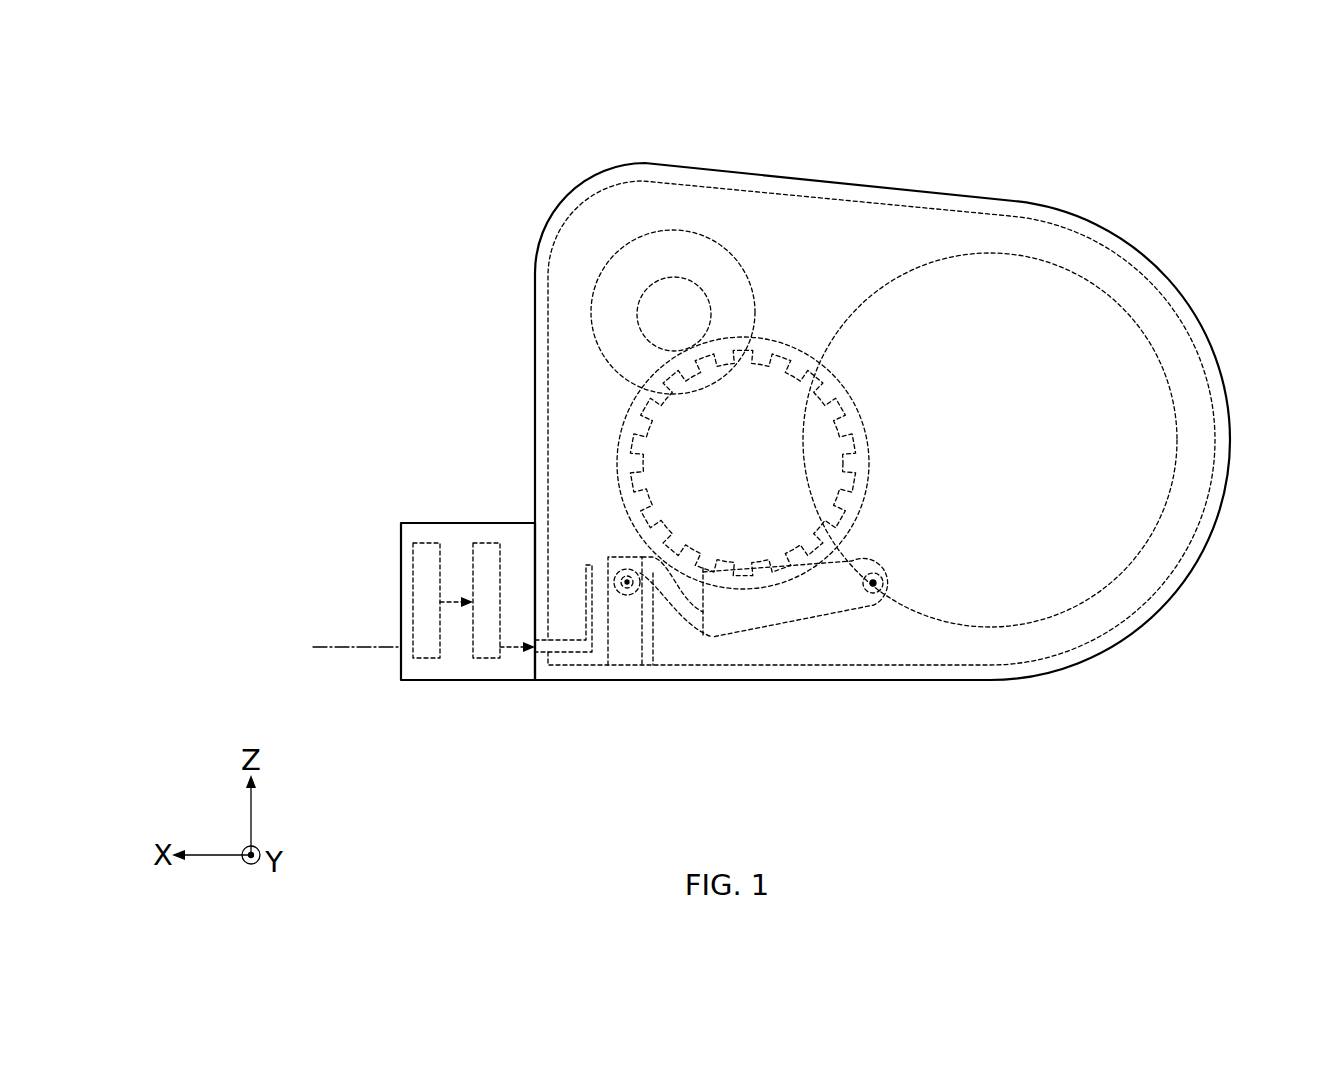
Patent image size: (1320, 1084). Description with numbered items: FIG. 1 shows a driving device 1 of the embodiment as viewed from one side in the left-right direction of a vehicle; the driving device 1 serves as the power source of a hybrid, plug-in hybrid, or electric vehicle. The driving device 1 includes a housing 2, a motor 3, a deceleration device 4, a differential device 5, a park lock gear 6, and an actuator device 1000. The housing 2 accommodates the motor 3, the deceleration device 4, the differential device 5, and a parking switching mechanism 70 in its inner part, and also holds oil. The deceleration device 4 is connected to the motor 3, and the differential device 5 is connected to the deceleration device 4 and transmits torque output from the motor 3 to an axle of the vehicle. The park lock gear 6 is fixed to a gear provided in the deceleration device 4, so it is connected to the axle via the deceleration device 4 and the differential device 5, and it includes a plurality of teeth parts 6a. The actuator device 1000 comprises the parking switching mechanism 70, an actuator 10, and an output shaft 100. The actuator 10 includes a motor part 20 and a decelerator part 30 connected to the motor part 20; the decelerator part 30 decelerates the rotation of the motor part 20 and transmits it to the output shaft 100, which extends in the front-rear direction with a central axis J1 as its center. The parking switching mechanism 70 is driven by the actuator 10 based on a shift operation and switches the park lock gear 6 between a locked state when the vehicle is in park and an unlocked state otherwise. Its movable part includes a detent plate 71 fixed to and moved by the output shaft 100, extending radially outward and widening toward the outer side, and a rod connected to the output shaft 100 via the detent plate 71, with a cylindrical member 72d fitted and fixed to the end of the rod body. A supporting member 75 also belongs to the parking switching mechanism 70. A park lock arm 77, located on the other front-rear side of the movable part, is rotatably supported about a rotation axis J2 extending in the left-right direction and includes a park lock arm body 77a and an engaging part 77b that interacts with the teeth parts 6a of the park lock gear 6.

The driving device 1 is at (859, 438).
The housing 2 is at (974, 193).
The motor 3 is at (656, 232).
The deceleration device 4 is at (729, 315).
The differential device 5 is at (1142, 326).
The park lock gear 6 is at (840, 380).
The teeth parts 6a is at (765, 345).
The actuator 10 is at (408, 594).
The motor part 20 is at (432, 660).
The decelerator part 30 is at (487, 543).
The output shaft 100 is at (571, 640).
The parking switching mechanism 70 is at (635, 665).
The detent plate 71 is at (605, 612).
The cylindrical member 72d is at (652, 600).
The supporting member 75 is at (630, 640).
The park lock arm 77 is at (774, 661).
The park lock arm body 77a is at (764, 607).
The engaging part 77b is at (706, 640).
The central axis J1 is at (328, 637).
The rotation axis J2 is at (872, 596).
The actuator device 1000 is at (757, 438).